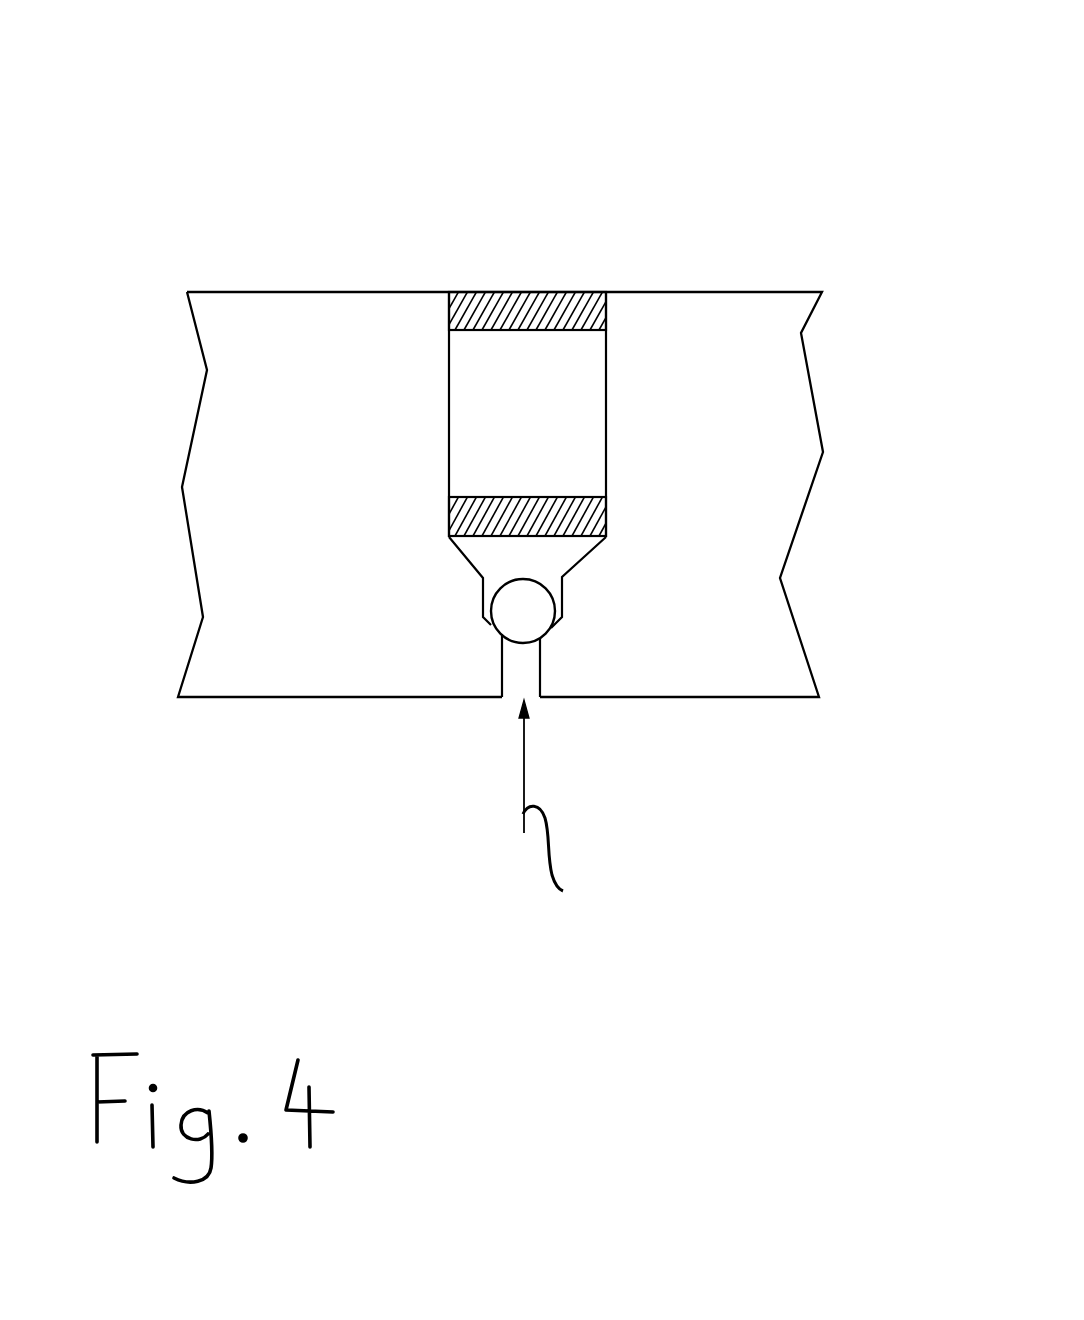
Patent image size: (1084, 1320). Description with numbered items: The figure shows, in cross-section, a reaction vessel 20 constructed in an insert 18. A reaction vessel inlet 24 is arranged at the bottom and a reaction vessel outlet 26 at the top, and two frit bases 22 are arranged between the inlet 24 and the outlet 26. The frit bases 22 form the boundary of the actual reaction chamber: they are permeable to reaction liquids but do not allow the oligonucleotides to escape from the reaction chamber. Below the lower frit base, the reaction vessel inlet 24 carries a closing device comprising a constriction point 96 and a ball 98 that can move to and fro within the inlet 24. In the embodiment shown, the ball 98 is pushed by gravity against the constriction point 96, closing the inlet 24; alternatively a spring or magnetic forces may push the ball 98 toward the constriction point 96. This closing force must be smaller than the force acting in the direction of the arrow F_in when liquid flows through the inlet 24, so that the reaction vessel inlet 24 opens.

The insert 18 is at (787, 402).
The reaction vessel 20 is at (558, 411).
The frit bases 22 is at (492, 291).
The reaction vessel inlet 24 is at (513, 683).
The reaction vessel outlet 26 is at (585, 285).
The constriction point 96 is at (547, 633).
The ball 98 is at (518, 633).